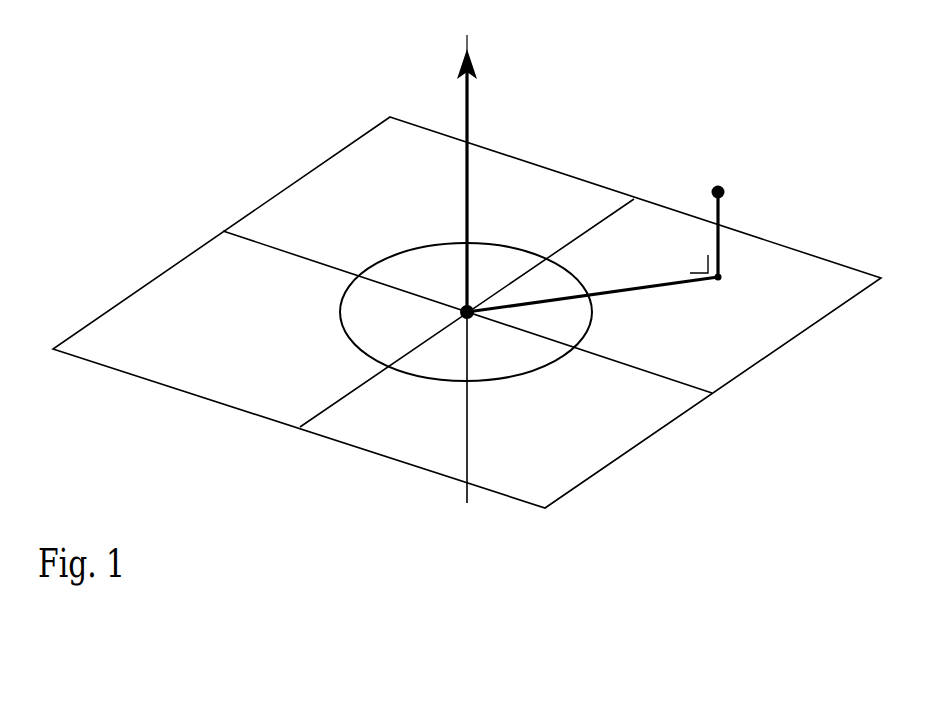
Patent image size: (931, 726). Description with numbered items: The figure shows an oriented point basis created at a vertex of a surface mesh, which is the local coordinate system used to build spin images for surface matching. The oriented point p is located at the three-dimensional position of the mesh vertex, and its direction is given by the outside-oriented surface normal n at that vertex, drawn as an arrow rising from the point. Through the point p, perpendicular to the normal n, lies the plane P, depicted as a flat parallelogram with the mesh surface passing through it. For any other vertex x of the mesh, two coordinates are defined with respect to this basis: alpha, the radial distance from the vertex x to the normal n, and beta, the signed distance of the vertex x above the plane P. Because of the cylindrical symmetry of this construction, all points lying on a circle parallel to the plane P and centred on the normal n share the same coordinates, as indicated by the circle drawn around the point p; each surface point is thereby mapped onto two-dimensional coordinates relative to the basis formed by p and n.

The plane P is at (467, 312).
The surface normal n is at (477, 269).
The oriented point p is at (459, 296).
The vertex x is at (730, 187).